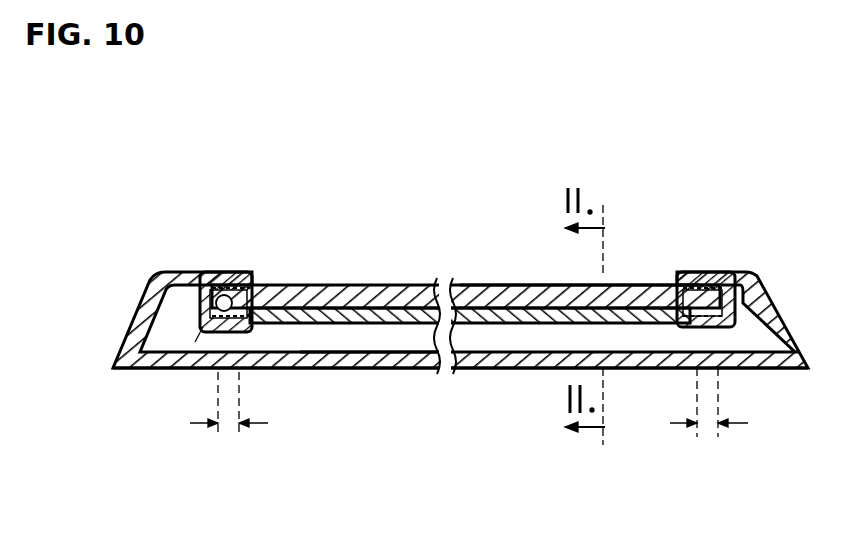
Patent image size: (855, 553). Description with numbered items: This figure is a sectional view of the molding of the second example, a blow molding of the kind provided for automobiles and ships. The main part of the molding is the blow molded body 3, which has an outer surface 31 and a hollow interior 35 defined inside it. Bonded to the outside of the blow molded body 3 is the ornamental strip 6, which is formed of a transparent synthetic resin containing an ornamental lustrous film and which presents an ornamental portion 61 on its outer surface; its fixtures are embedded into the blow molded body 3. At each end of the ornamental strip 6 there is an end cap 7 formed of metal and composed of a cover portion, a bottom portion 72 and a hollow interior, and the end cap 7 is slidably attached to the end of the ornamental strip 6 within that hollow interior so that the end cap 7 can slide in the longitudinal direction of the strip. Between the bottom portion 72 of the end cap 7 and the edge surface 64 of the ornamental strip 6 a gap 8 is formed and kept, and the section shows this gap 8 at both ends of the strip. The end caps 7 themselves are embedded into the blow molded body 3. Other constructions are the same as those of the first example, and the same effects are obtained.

The blow molded body 3 is at (128, 320).
The outer surface 31 is at (192, 268).
The ornamental strip 6 is at (365, 285).
The ornamental portion 61 is at (480, 285).
The end cap 7 is at (240, 272).
The edge surface 64 is at (219, 268).
The bottom portion 72 is at (172, 372).
The hollow interior 35 is at (377, 370).
The gap 8 is at (228, 430).